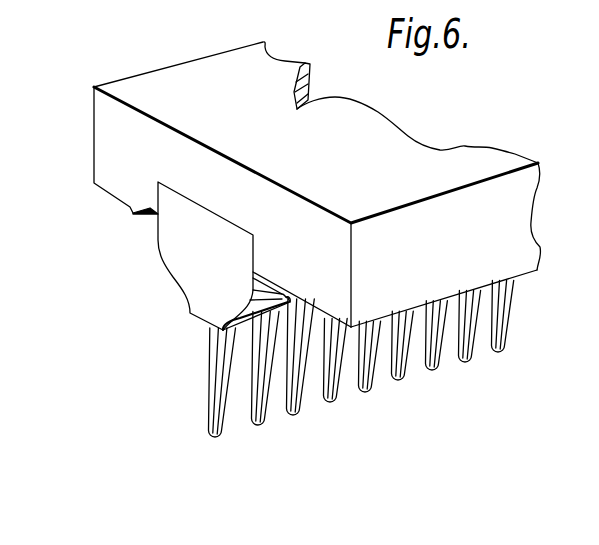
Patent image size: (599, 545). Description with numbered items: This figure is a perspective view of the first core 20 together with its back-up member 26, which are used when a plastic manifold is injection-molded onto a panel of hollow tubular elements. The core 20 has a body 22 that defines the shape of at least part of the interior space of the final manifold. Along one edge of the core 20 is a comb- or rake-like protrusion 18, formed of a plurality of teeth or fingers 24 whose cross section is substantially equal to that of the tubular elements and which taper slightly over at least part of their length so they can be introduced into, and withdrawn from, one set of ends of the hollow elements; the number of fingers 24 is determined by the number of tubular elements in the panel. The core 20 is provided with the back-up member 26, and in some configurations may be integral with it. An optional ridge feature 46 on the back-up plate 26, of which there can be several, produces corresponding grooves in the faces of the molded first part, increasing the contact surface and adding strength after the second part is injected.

The back-up member 26 is at (120, 147).
The ridge feature 46 is at (134, 212).
The first core 20 is at (172, 291).
The body 22 is at (214, 267).
The comb-like protrusion 18 is at (203, 411).
The fingers 24 is at (222, 410).